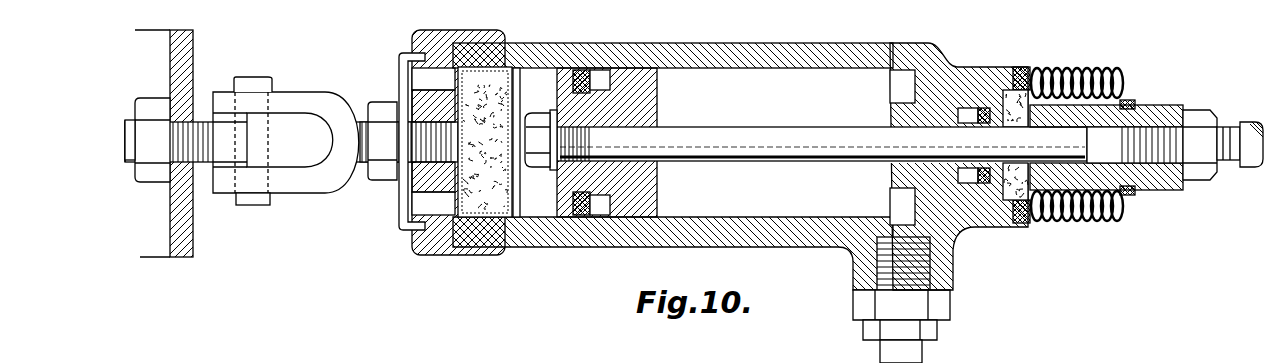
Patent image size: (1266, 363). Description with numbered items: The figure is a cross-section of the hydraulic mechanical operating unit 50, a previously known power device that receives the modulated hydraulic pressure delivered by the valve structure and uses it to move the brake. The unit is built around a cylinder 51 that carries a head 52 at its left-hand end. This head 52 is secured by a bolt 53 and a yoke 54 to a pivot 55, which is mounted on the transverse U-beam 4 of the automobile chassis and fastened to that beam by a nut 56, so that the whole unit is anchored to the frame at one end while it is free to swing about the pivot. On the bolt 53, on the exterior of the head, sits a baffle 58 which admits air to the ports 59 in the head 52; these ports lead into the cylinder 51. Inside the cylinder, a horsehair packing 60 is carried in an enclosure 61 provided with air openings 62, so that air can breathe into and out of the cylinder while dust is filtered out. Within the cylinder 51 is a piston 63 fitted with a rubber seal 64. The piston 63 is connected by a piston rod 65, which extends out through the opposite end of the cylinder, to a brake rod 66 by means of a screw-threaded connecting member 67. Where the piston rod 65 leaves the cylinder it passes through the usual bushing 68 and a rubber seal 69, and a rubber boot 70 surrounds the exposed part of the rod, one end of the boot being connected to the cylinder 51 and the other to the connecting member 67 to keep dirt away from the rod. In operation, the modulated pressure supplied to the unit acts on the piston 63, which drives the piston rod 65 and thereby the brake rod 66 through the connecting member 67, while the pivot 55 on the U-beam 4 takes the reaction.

The transverse U-beam 4 is at (181, 232).
The mechanical operating unit 50 is at (717, 256).
The cylinder 51 is at (764, 247).
The head 52 is at (414, 35).
The bolt 53 is at (363, 167).
The yoke 54 is at (320, 182).
The pivot 55 is at (200, 122).
The nut 56 is at (152, 104).
The baffle 58 is at (404, 74).
The ports 59 is at (420, 205).
The horsehair packing 60 is at (485, 200).
The enclosure 61 is at (519, 115).
The air openings 62 is at (540, 170).
The piston 63 is at (658, 99).
The rubber seal 64 is at (590, 217).
The piston rod 65 is at (774, 162).
The brake rod 66 is at (1250, 168).
The screw-threaded connecting member 67 is at (1182, 190).
The bushing 68 is at (955, 222).
The rubber seal 69 is at (976, 108).
The rubber boot 70 is at (1105, 222).